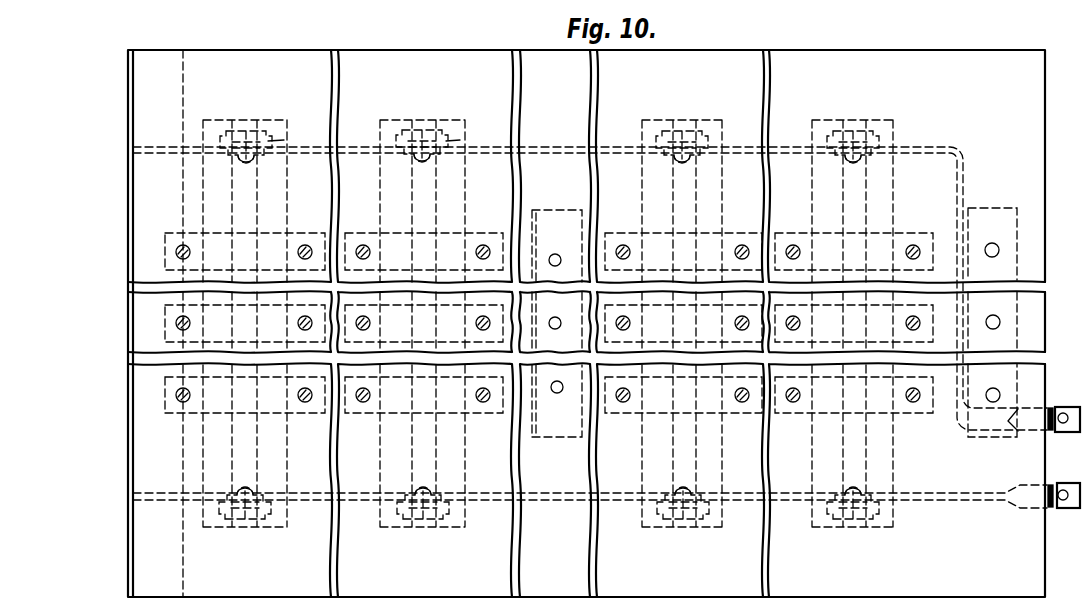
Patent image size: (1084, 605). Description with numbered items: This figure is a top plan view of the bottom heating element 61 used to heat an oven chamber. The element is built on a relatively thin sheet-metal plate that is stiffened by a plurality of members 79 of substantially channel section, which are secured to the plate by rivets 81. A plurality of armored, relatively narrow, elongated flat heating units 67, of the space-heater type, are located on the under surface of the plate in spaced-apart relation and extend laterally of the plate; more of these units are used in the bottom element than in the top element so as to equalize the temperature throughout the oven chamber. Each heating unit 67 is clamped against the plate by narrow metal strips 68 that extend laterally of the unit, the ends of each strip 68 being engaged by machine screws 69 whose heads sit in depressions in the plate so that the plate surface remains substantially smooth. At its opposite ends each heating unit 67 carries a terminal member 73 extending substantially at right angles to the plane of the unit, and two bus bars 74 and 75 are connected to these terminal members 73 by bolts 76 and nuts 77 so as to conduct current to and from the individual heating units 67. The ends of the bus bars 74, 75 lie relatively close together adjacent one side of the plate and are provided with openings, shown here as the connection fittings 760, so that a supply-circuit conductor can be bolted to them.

The bottom heating element 61 is at (72, 310).
The heating unit 67 is at (280, 212).
The metal strip 68 is at (168, 236).
The machine screw 69 is at (187, 245).
The terminal member 73 is at (272, 140).
The bus bar 74 is at (925, 146).
The bus bar 75 is at (940, 502).
The bolt 76 is at (250, 128).
The nut 77 is at (258, 160).
The channel-section member 79 is at (557, 438).
The rivet 81 is at (560, 325).
The connector 760 is at (1063, 413).